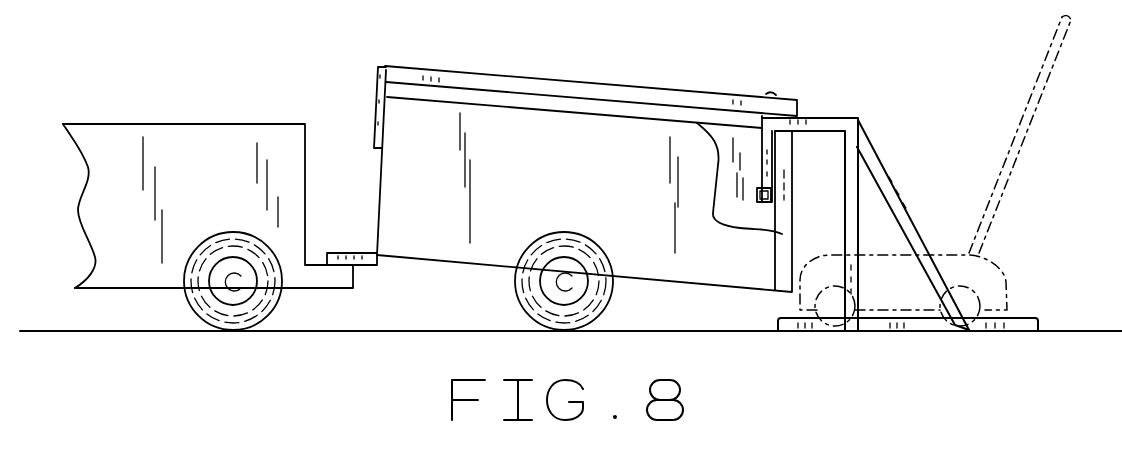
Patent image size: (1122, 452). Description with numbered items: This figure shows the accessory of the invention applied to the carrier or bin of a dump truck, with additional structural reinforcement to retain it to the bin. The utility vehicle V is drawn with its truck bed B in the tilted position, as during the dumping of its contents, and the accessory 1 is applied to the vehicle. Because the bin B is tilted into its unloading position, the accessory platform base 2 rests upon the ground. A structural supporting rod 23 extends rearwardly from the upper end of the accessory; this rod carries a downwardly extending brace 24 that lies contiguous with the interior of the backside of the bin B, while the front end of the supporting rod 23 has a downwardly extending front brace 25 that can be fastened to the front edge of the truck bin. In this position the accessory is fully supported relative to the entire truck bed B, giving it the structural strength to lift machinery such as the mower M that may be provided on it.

The accessory 1 is at (893, 105).
The accessory platform base 2 is at (1018, 326).
The structural supporting rod 23 is at (632, 92).
The downwardly extending brace 24 is at (763, 148).
The downwardly extending front brace 25 is at (376, 112).
The utility vehicle V is at (220, 196).
The truck bed B is at (551, 185).
The mower M is at (1004, 249).